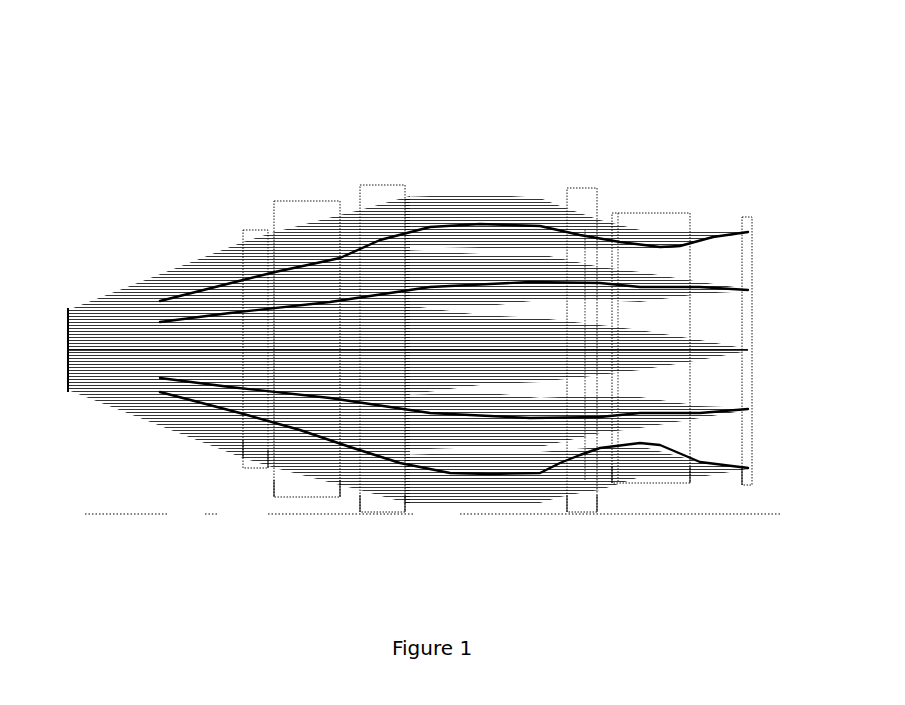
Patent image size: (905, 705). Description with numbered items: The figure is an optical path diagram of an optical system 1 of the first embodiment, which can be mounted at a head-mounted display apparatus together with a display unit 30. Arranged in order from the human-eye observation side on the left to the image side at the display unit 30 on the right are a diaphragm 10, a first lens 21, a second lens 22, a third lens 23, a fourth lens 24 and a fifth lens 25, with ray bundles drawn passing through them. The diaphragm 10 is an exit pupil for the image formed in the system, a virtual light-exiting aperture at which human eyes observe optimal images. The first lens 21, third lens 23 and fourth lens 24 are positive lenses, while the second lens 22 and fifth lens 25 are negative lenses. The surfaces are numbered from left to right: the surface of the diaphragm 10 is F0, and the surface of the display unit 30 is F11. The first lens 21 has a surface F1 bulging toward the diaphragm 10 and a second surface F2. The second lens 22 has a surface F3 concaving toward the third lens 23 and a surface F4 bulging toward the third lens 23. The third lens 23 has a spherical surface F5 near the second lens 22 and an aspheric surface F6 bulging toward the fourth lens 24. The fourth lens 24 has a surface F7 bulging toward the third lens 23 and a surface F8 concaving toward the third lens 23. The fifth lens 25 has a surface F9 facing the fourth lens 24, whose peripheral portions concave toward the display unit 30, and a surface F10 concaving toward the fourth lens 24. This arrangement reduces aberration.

The optical system 1 is at (345, 92).
The diaphragm 10 is at (67, 313).
The first lens 21 is at (253, 234).
The second lens 22 is at (318, 208).
The third lens 23 is at (382, 190).
The fourth lens 24 is at (578, 190).
The fifth lens 25 is at (650, 217).
The display unit 30 is at (750, 200).
The surface of the diaphragm F0 is at (70, 390).
The surface of the first lens F1 is at (237, 452).
The surface of the first lens F2 is at (268, 466).
The surface of the second lens F3 is at (276, 496).
The surface of the second lens F4 is at (342, 494).
The surface of the third lens F5 is at (361, 509).
The surface of the third lens F6 is at (452, 470).
The surface of the fourth lens F7 is at (550, 498).
The surface of the fourth lens F8 is at (594, 509).
The surface of the fifth lens F9 is at (614, 485).
The surface of the fifth lens F10 is at (689, 482).
The surface of the display unit F11 is at (742, 478).